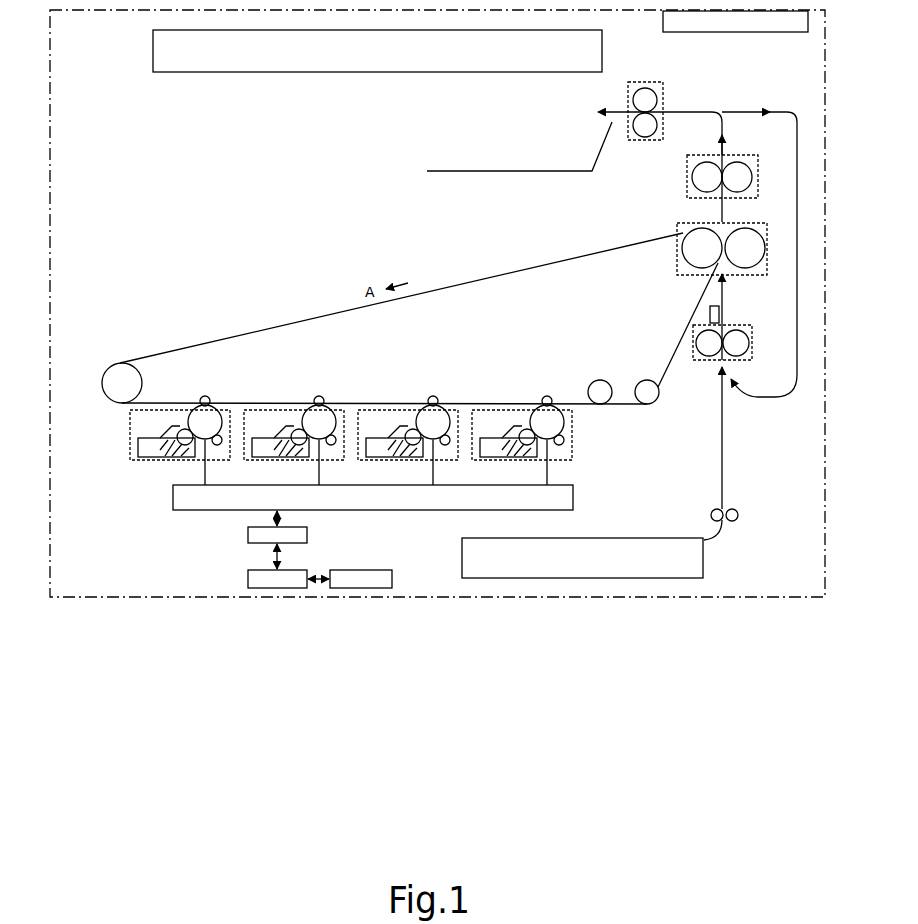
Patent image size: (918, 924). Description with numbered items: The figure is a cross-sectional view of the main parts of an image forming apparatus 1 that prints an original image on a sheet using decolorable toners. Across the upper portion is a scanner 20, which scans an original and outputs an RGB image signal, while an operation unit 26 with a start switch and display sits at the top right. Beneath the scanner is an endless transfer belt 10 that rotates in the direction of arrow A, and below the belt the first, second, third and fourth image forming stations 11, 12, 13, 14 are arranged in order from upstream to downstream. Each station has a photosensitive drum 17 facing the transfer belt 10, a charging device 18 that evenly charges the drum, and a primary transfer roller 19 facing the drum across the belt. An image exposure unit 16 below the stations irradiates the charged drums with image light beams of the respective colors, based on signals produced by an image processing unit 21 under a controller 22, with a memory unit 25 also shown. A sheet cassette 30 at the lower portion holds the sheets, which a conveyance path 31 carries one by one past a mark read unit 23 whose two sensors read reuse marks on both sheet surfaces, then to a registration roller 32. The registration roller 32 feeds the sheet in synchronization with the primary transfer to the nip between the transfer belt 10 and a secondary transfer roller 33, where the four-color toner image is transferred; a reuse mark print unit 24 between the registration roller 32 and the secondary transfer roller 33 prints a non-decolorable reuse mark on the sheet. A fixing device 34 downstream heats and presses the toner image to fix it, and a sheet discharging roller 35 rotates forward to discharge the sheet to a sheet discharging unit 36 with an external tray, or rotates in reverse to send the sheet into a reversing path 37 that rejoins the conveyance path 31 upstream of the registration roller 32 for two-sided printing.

The image forming apparatus 1 is at (829, 208).
The transfer belt 10 is at (448, 285).
The first image forming station 11 is at (133, 463).
The second image forming station 12 is at (281, 463).
The third image forming station 13 is at (398, 463).
The fourth image forming station 14 is at (494, 463).
The image exposure unit 16 is at (172, 498).
The photosensitive drum 17 is at (222, 409).
The charging device 18 is at (208, 446).
The primary transfer roller 19 is at (208, 397).
The scanner 20 is at (380, 74).
The image processing unit 21 is at (300, 527).
The controller 22 is at (248, 578).
The mark read unit 23 is at (713, 521).
The reuse mark print unit 24 is at (709, 310).
The memory unit 25 is at (356, 570).
The operation unit 26 is at (722, 35).
The sheet cassette 30 is at (707, 562).
The conveyance path 31 is at (725, 478).
The registration roller 32 is at (734, 324).
The secondary transfer roller 33 is at (674, 277).
The fixing device 34 is at (684, 171).
The sheet discharging roller 35 is at (666, 90).
The sheet discharging unit 36 is at (592, 172).
The reversing path 37 is at (761, 402).